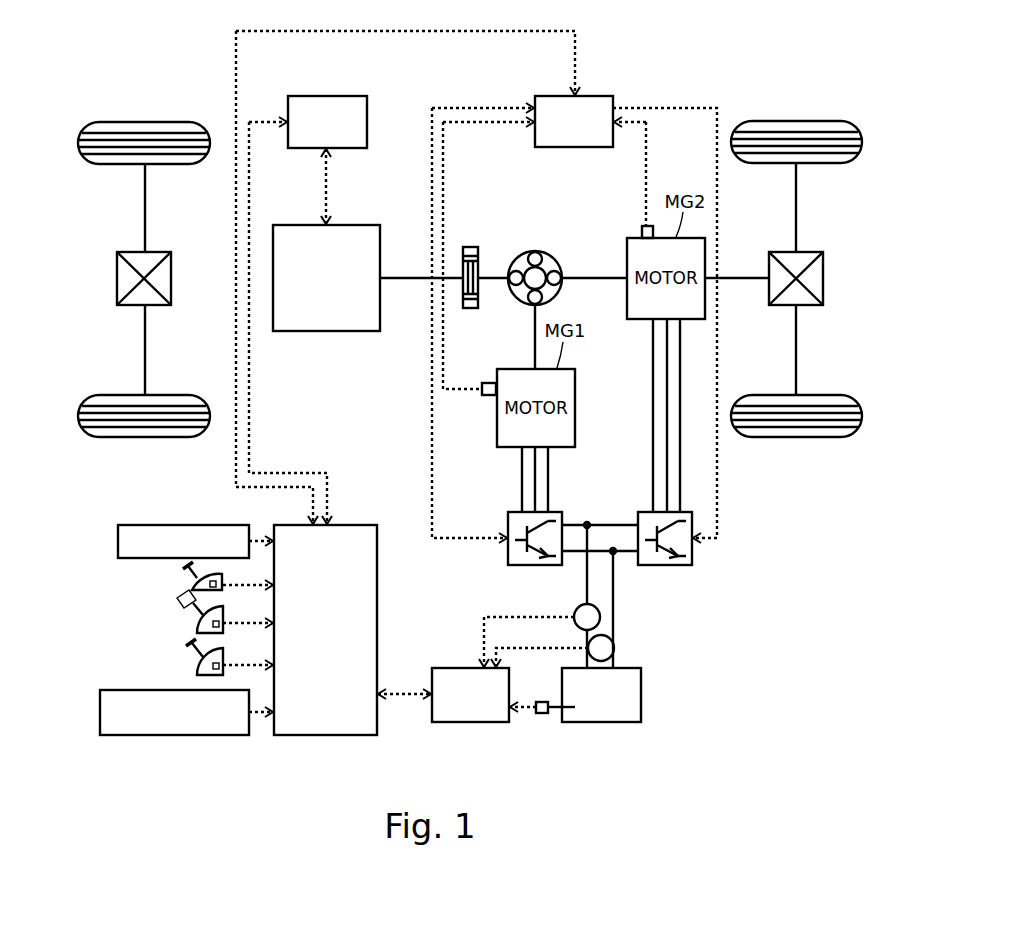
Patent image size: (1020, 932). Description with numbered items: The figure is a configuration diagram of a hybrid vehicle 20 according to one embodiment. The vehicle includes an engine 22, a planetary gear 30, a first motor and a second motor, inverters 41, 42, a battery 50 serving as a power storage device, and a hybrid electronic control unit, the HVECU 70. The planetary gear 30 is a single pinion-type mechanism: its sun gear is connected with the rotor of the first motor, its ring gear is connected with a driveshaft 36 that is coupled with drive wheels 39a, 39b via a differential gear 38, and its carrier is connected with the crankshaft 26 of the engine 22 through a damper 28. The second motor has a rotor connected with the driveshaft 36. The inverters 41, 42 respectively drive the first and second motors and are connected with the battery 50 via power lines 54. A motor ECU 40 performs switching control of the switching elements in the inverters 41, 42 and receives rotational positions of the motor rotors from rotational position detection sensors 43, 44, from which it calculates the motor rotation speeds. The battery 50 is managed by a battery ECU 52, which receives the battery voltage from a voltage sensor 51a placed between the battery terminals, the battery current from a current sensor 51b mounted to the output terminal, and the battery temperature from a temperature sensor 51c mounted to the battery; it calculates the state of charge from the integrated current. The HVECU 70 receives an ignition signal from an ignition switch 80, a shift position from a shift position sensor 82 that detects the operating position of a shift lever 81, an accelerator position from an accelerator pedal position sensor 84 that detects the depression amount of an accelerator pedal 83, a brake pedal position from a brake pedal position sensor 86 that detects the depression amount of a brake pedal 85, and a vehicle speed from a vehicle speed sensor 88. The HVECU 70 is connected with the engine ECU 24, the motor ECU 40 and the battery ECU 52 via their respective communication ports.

The hybrid vehicle 20 is at (705, 69).
The engine 22 is at (348, 224).
The engine ECU 24 is at (326, 95).
The crankshaft 26 is at (399, 276).
The damper 28 is at (470, 246).
The planetary gear 30 is at (536, 251).
The driveshaft 36 is at (740, 276).
The differential gear 38 is at (804, 251).
The drive wheel 39a is at (791, 121).
The drive wheel 39b is at (791, 438).
The motor ECU 40 is at (585, 95).
The inverter 41 is at (556, 511).
The inverter 42 is at (688, 511).
The rotational position detection sensor 43 is at (488, 382).
The rotational position detection sensor 44 is at (641, 228).
The battery 50 is at (641, 694).
The voltage sensor 51a is at (614, 648).
The current sensor 51b is at (600, 617).
The temperature sensor 51c is at (541, 713).
The battery ECU 52 is at (457, 667).
The power lines 54 is at (613, 597).
The HVECU 70 is at (353, 524).
The ignition switch 80 is at (118, 541).
The shift lever 81 is at (200, 575).
The shift position sensor 82 is at (206, 585).
The accelerator pedal 83 is at (195, 612).
The accelerator pedal position sensor 84 is at (208, 625).
The brake pedal 85 is at (200, 655).
The brake pedal position sensor 86 is at (205, 667).
The vehicle speed sensor 88 is at (100, 712).